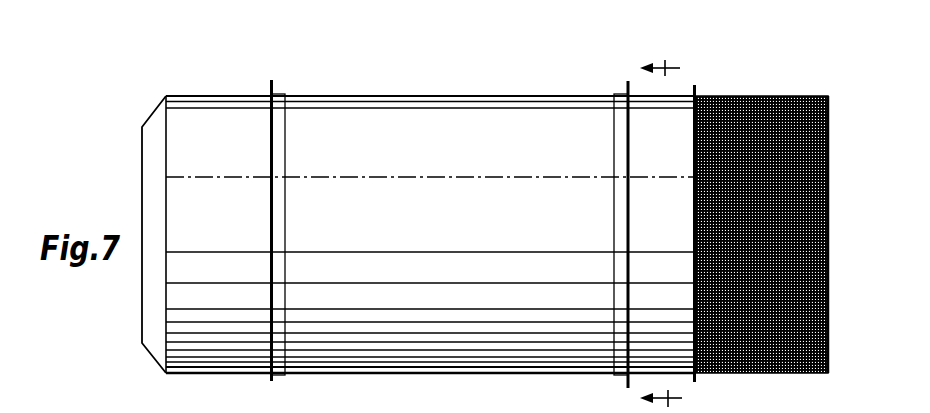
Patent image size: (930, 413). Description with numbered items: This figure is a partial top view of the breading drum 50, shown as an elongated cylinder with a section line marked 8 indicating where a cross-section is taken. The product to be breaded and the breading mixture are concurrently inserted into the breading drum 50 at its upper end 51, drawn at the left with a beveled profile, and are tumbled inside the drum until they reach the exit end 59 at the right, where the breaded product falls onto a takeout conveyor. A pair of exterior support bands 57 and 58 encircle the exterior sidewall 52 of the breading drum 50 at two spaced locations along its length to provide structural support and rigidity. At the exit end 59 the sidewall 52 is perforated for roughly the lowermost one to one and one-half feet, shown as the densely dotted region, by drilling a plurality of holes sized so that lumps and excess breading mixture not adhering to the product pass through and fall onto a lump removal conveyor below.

The breading drum 50 is at (437, 89).
The upper end 51 is at (207, 110).
The exterior sidewall 52 is at (444, 157).
The exterior support band 57 is at (287, 128).
The exterior support band 58 is at (616, 138).
The exit end 59 is at (763, 95).
The section line 8- 8 is at (669, 235).